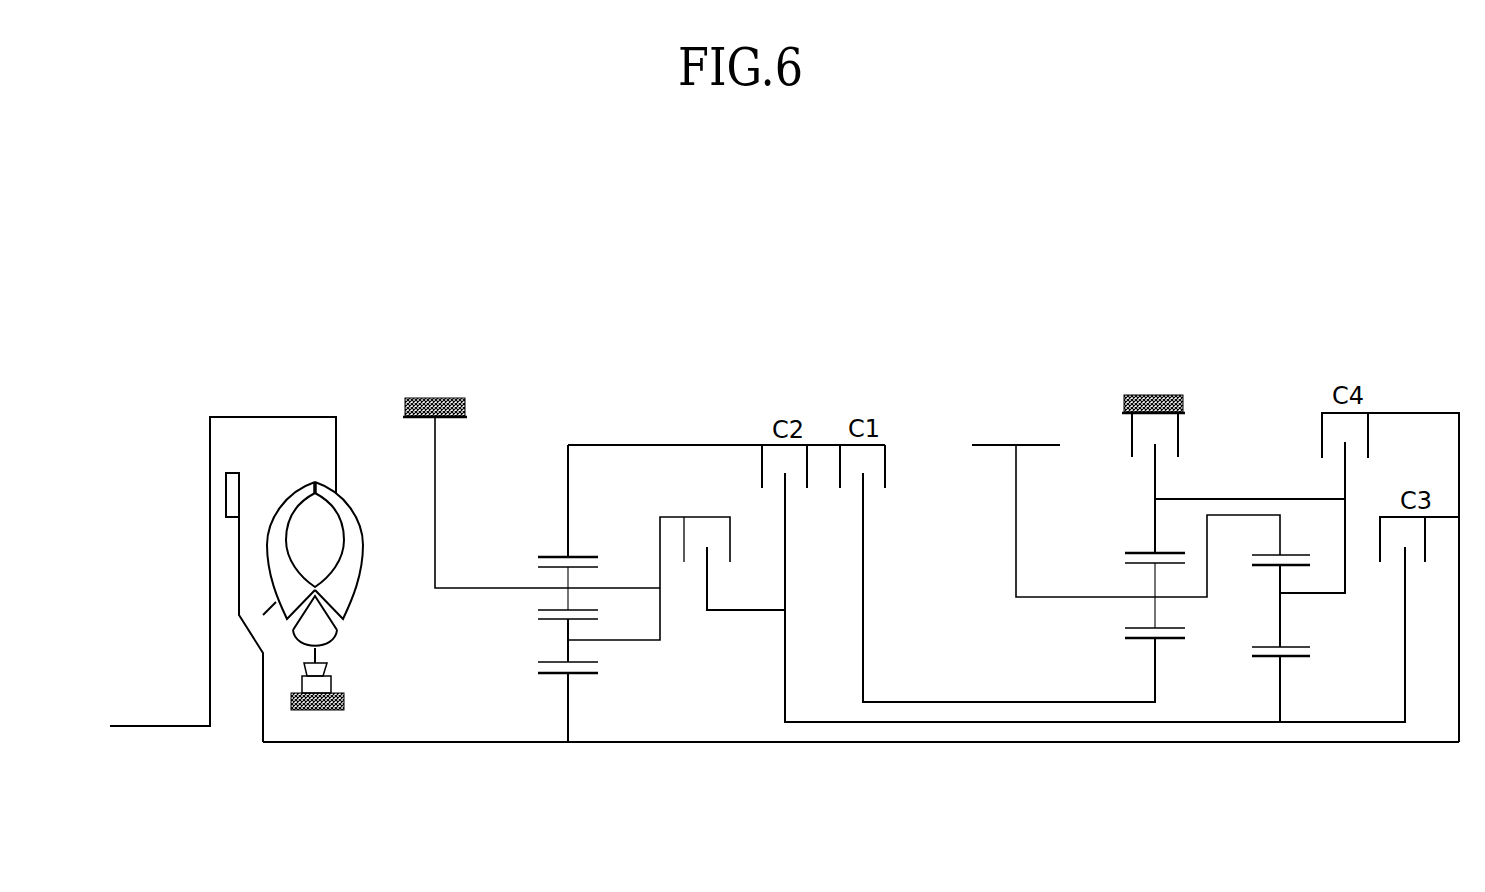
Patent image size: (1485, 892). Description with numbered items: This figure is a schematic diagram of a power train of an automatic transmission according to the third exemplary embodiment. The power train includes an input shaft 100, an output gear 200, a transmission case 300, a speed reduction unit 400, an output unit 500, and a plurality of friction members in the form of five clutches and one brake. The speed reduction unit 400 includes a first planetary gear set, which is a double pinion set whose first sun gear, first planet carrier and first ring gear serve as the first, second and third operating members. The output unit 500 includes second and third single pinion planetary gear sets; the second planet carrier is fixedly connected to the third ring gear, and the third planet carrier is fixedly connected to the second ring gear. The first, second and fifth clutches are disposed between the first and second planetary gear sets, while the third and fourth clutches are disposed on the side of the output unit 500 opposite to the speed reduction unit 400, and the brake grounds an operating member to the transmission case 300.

The input shaft 100 is at (388, 745).
The output gear 200 is at (1016, 542).
The transmission case 300 is at (449, 397).
The speed reduction unit 400 is at (596, 720).
The output unit 500 is at (1277, 800).